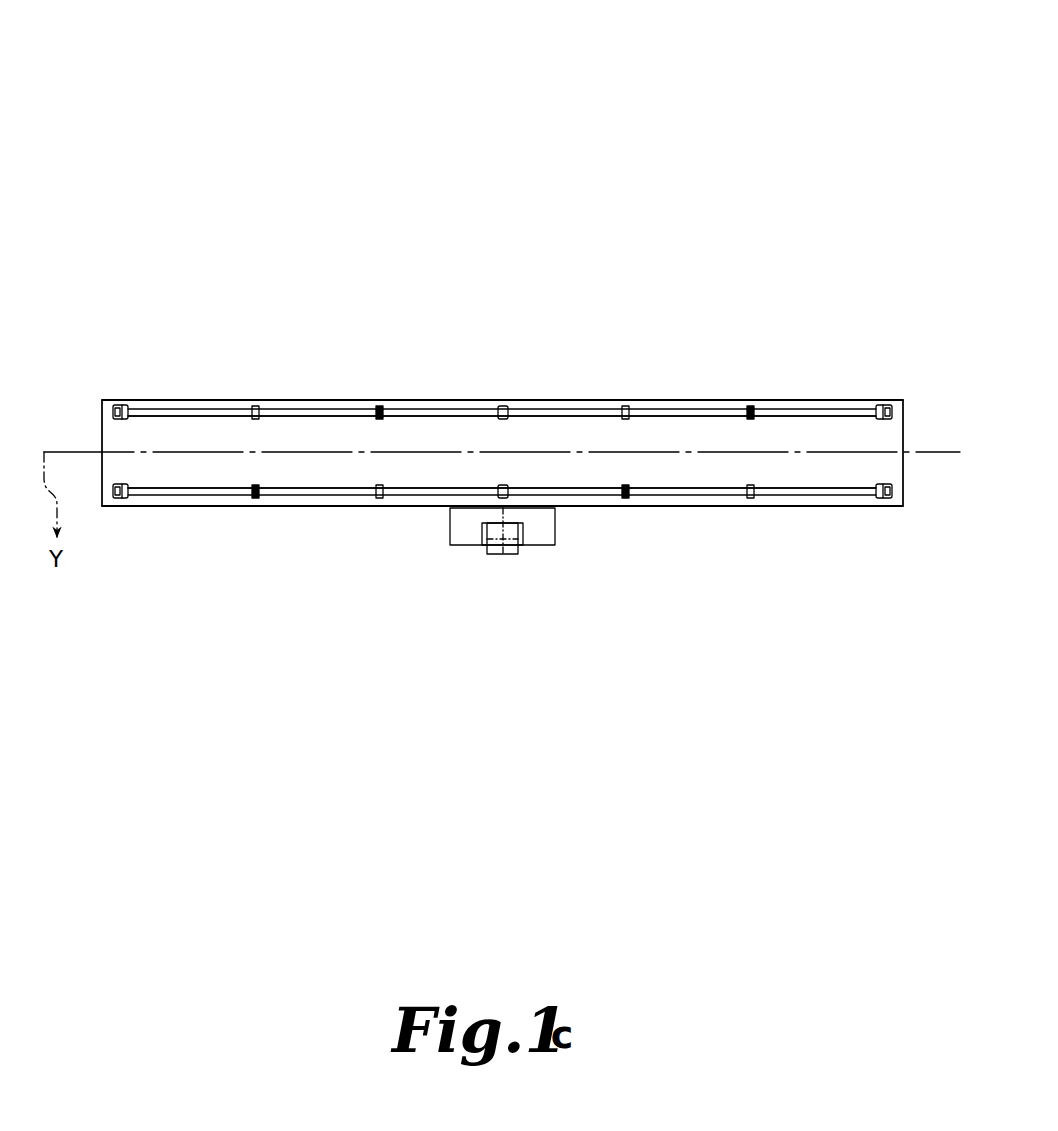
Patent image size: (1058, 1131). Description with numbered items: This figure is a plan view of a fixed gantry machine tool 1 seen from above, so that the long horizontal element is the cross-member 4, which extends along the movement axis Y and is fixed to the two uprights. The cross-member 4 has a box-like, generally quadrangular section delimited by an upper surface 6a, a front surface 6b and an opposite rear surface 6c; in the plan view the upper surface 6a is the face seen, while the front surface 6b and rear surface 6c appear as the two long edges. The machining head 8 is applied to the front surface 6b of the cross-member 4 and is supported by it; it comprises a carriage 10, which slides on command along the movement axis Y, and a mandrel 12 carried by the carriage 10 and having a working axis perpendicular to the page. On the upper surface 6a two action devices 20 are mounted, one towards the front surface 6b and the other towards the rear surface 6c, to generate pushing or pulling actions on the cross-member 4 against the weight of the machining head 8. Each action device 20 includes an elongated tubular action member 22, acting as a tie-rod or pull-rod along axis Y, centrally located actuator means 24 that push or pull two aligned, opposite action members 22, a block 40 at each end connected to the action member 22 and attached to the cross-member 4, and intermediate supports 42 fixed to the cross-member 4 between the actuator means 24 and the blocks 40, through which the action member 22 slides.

The machine tool 1 is at (812, 163).
The cross-member 4 is at (803, 392).
The upper surface 6a is at (567, 433).
The front surface 6b is at (272, 511).
The rear surface 6c is at (278, 394).
The machining head 8 is at (578, 529).
The carriage 10 is at (538, 531).
The mandrel 12 is at (507, 549).
The action device 20 is at (187, 396).
The action member 22 is at (448, 412).
The actuator means 24 is at (503, 399).
The block 40 is at (122, 400).
The intermediate support 42 is at (380, 406).